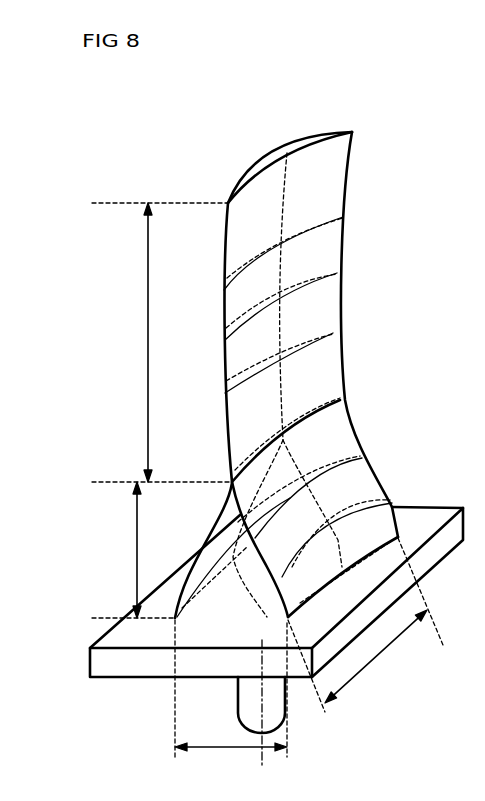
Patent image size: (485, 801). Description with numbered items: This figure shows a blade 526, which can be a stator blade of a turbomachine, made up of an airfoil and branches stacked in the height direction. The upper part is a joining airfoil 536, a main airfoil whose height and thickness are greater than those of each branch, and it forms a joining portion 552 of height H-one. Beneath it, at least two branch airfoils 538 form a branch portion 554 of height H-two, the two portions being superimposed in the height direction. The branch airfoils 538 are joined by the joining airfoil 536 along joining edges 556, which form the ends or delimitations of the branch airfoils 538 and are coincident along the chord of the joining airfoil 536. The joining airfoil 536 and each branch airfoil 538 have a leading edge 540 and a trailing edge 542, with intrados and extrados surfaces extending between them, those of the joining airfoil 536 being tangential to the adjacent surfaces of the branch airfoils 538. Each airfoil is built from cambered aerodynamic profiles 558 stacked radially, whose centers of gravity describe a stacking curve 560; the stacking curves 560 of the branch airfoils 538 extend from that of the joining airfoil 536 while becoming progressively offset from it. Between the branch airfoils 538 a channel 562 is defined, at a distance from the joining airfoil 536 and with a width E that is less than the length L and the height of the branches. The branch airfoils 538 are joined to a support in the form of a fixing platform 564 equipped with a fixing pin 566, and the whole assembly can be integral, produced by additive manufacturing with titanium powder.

The blade 526 is at (150, 183).
The joining airfoil 536 is at (310, 262).
The branch airfoils 538 is at (345, 440).
The leading edge 540 is at (223, 373).
The trailing edge 542 is at (340, 305).
The joining portion 552 is at (107, 203).
The branch portion 554 is at (107, 482).
The joining edges 556 is at (347, 408).
The aerodynamic profiles 558 is at (288, 230).
The stacking curve 560 is at (223, 298).
The channel 562 is at (260, 596).
The fixing platform 564 is at (113, 668).
The fixing pin 566 is at (273, 705).